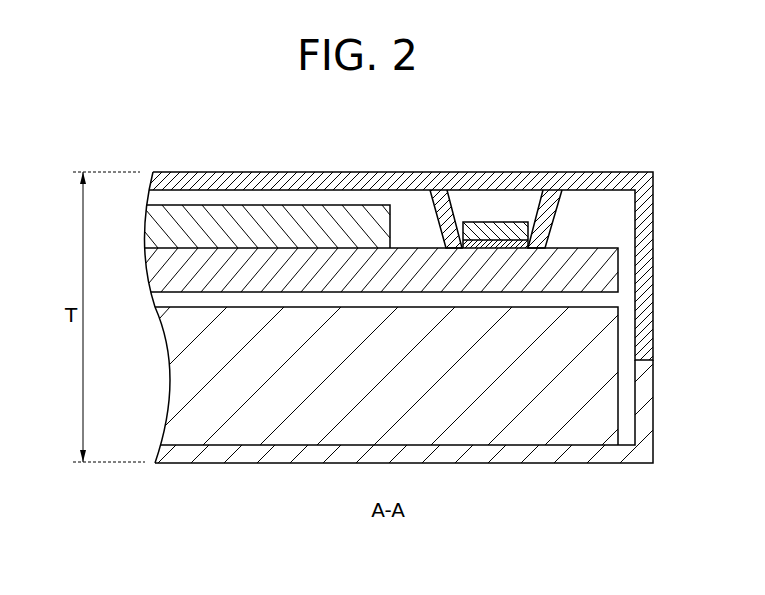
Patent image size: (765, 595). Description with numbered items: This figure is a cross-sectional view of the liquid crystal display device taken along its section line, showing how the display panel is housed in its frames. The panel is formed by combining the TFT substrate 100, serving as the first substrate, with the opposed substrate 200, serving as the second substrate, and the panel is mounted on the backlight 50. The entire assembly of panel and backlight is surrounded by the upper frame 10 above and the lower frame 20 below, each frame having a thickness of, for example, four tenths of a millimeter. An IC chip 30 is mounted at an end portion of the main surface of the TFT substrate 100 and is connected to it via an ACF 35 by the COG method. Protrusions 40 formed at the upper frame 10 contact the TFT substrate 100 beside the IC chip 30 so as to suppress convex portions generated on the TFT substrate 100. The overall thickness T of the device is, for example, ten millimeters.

The upper frame 10 is at (610, 185).
The lower frame 20 is at (598, 458).
The IC chip 30 is at (502, 222).
The ACF 35 is at (516, 244).
The protrusion 40 is at (447, 198).
The backlight 50 is at (530, 433).
The TFT substrate 100 is at (260, 263).
The opposed substrate 200 is at (337, 220).